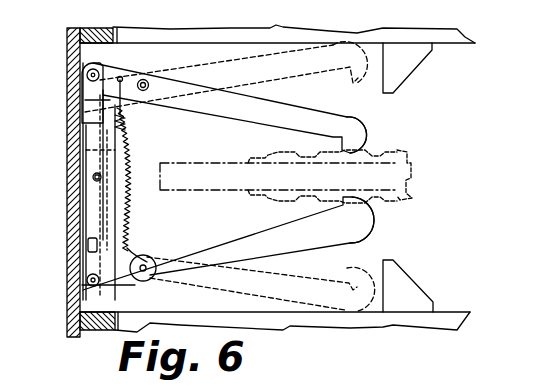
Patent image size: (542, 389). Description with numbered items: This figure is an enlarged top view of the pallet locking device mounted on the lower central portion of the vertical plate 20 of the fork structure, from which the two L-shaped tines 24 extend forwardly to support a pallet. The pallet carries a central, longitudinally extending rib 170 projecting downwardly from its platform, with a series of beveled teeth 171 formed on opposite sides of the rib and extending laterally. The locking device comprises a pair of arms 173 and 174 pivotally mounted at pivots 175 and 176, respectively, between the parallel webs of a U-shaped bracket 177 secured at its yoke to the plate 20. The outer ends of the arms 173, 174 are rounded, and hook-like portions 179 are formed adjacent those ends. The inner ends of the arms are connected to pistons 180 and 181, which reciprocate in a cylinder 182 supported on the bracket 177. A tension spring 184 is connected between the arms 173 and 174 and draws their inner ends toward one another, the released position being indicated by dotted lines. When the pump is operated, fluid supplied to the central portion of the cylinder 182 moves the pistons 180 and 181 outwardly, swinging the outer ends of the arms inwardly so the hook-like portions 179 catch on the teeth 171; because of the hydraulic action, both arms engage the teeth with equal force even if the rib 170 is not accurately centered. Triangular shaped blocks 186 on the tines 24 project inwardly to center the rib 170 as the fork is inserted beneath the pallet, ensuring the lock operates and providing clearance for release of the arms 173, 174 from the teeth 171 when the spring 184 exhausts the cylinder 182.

The vertical plate 20 is at (67, 334).
The L-shaped tines 24 is at (452, 44).
The rib 170 is at (413, 172).
The teeth 171 is at (397, 147).
The arm 173 is at (217, 107).
The arm 174 is at (287, 243).
The pivot 175 is at (144, 81).
The pivot 176 is at (143, 255).
The U-shaped bracket 177 is at (97, 207).
The hook-like portions 179 is at (357, 124).
The piston 180 is at (92, 109).
The piston 181 is at (72, 272).
The cylinder 182 is at (100, 150).
The tension spring 184 is at (129, 157).
The triangular shaped blocks 186 is at (410, 72).